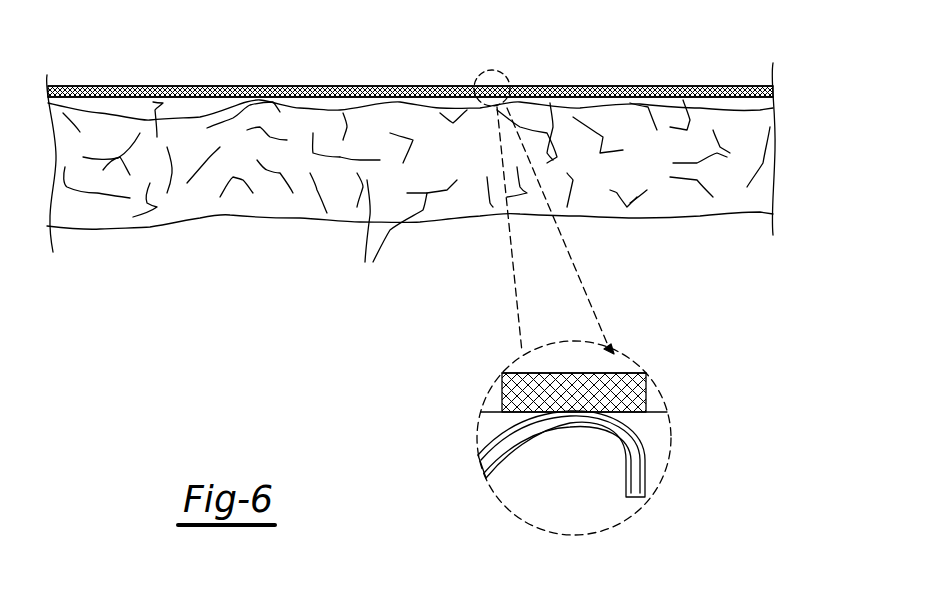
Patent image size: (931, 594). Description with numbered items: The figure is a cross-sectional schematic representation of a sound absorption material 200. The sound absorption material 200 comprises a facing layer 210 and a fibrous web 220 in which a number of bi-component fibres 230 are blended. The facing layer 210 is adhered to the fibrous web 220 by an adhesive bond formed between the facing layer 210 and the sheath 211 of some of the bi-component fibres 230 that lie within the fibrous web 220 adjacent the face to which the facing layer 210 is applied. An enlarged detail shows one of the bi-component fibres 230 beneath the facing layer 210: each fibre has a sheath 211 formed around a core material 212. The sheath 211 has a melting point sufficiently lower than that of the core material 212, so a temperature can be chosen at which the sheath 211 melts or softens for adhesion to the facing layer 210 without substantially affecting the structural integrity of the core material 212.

The sound absorption material 200 is at (637, 272).
The facing layer 210 is at (626, 98).
The sheath 211 is at (490, 442).
The core material 212 is at (512, 454).
The fibrous web 220 is at (228, 218).
The bi-component fibres 230 is at (563, 552).